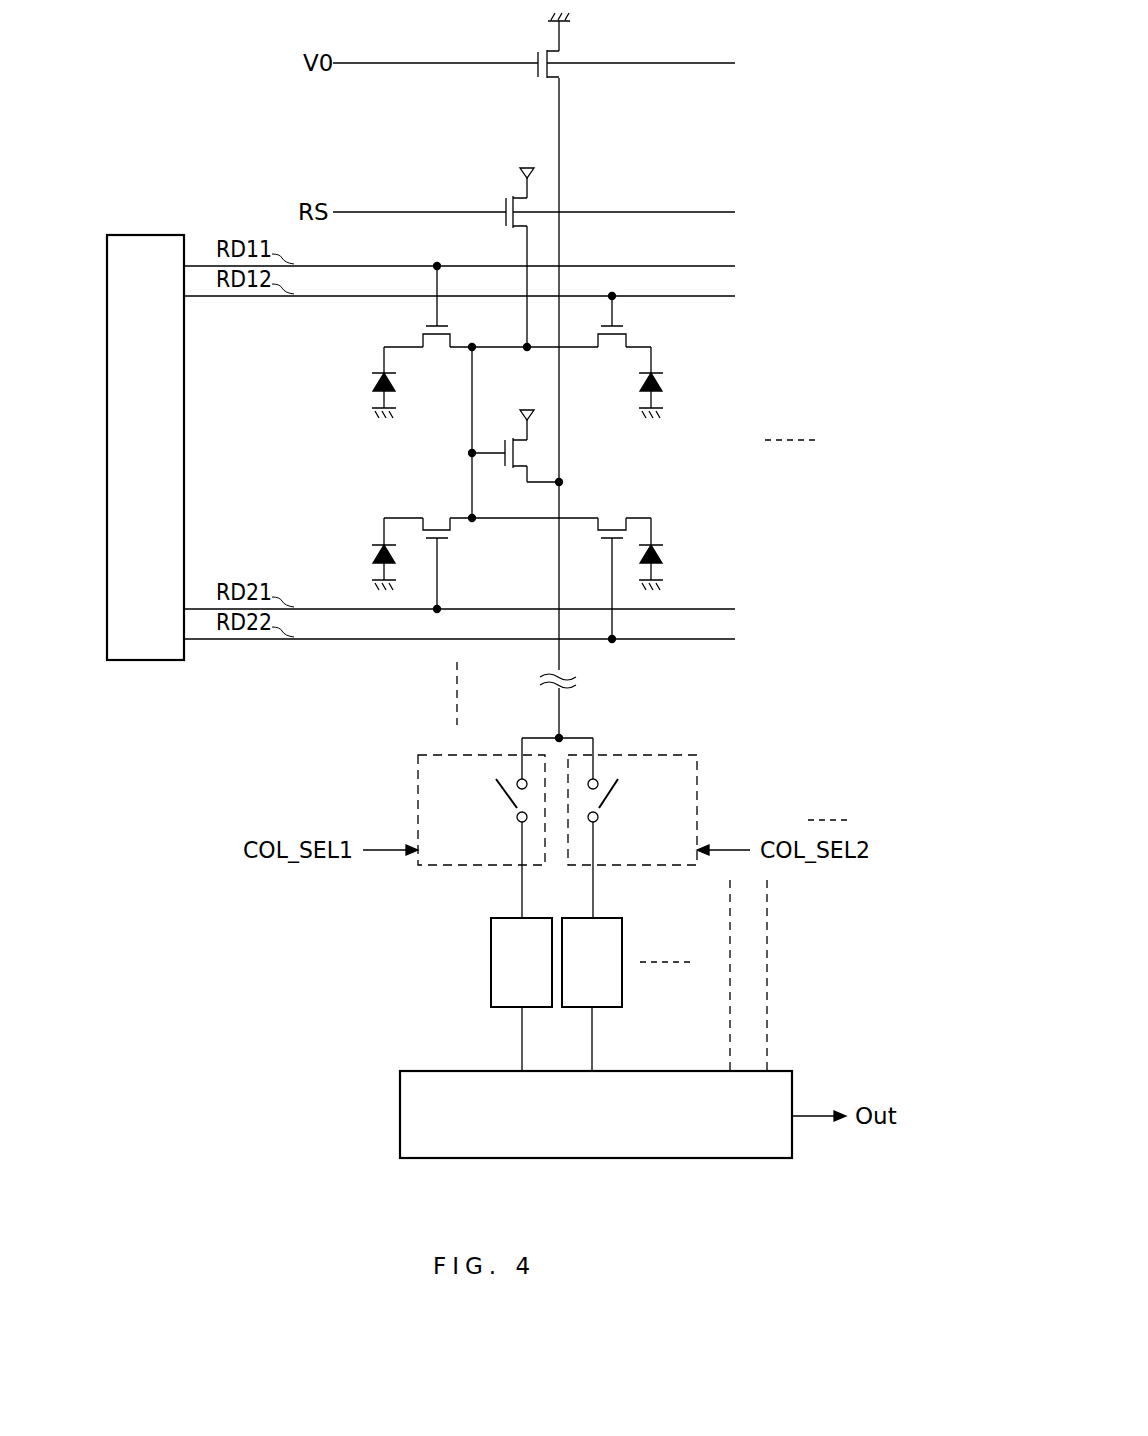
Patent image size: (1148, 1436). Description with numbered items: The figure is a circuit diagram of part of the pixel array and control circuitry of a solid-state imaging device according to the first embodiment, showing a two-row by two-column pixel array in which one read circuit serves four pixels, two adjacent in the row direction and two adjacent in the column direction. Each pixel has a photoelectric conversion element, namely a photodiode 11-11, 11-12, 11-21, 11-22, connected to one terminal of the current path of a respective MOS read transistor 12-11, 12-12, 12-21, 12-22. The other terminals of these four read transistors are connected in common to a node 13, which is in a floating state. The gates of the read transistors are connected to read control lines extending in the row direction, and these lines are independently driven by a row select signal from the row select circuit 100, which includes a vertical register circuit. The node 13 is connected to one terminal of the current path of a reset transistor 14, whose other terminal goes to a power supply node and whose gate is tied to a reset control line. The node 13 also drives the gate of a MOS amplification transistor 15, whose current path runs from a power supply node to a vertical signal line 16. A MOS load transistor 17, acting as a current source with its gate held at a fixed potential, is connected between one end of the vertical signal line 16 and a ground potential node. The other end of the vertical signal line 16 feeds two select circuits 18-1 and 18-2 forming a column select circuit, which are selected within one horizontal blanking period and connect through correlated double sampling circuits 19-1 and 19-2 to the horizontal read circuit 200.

The row select circuit 100 is at (151, 235).
The photodiode 11-11 is at (372, 382).
The photodiode 11-12 is at (663, 382).
The photodiode 11-21 is at (372, 553).
The photodiode 11-22 is at (663, 553).
The MOS read transistor 12-11 is at (438, 349).
The MOS read transistor 12-12 is at (611, 349).
The MOS read transistor 12-21 is at (438, 518).
The MOS read transistor 12-22 is at (614, 518).
The node 13 is at (470, 452).
The reset transistor 14 is at (502, 196).
The MOS amplification transistor 15 is at (527, 454).
The vertical signal line 16 is at (561, 155).
The MOS load transistor 17 is at (561, 58).
The select circuit 18-1 is at (417, 792).
The select circuit 18-2 is at (698, 790).
The correlated double sampling (CDS) circuit 19-1 is at (491, 998).
The correlated double sampling (CDS) circuit 19-2 is at (624, 996).
The horizontal read circuit 200 is at (400, 1096).